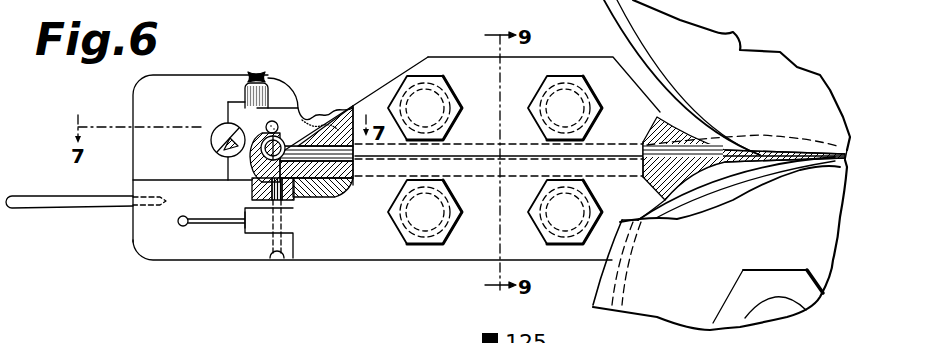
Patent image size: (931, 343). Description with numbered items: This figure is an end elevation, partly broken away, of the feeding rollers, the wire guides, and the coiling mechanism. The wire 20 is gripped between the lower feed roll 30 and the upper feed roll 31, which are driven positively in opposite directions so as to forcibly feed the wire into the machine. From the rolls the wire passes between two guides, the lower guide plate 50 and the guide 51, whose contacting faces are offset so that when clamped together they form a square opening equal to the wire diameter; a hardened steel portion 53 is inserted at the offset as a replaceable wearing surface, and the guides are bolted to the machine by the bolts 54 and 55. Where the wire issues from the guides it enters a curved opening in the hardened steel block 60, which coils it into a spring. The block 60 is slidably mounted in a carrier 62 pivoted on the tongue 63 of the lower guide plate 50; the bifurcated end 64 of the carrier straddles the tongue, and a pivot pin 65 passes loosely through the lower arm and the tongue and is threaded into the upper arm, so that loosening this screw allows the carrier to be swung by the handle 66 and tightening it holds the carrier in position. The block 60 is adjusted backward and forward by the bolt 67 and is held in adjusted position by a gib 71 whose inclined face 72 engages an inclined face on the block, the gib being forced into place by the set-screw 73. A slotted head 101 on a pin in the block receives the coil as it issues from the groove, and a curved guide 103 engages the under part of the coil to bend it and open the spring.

The wire 20 is at (841, 114).
The lower feed roll 30 is at (675, 302).
The upper feed roll 31 is at (752, 60).
The lower guide plate 50 is at (472, 245).
The guide 51 is at (552, 60).
The hardened steel portion 53 is at (686, 143).
The bolt 54 is at (424, 244).
The bolt 55 is at (432, 80).
The hardened steel block 60 is at (298, 119).
The carrier 62 is at (142, 240).
The tongue 63 is at (258, 229).
The bifurcated end 64 is at (240, 213).
The pivot pin 65 is at (278, 250).
The handle 66 is at (43, 203).
The bolt 67 is at (212, 137).
The gib 71 is at (266, 83).
The inclined face 72 is at (235, 101).
The set-screw 73 is at (262, 71).
The slotted head 101 is at (265, 123).
The curved guide 103 is at (341, 117).